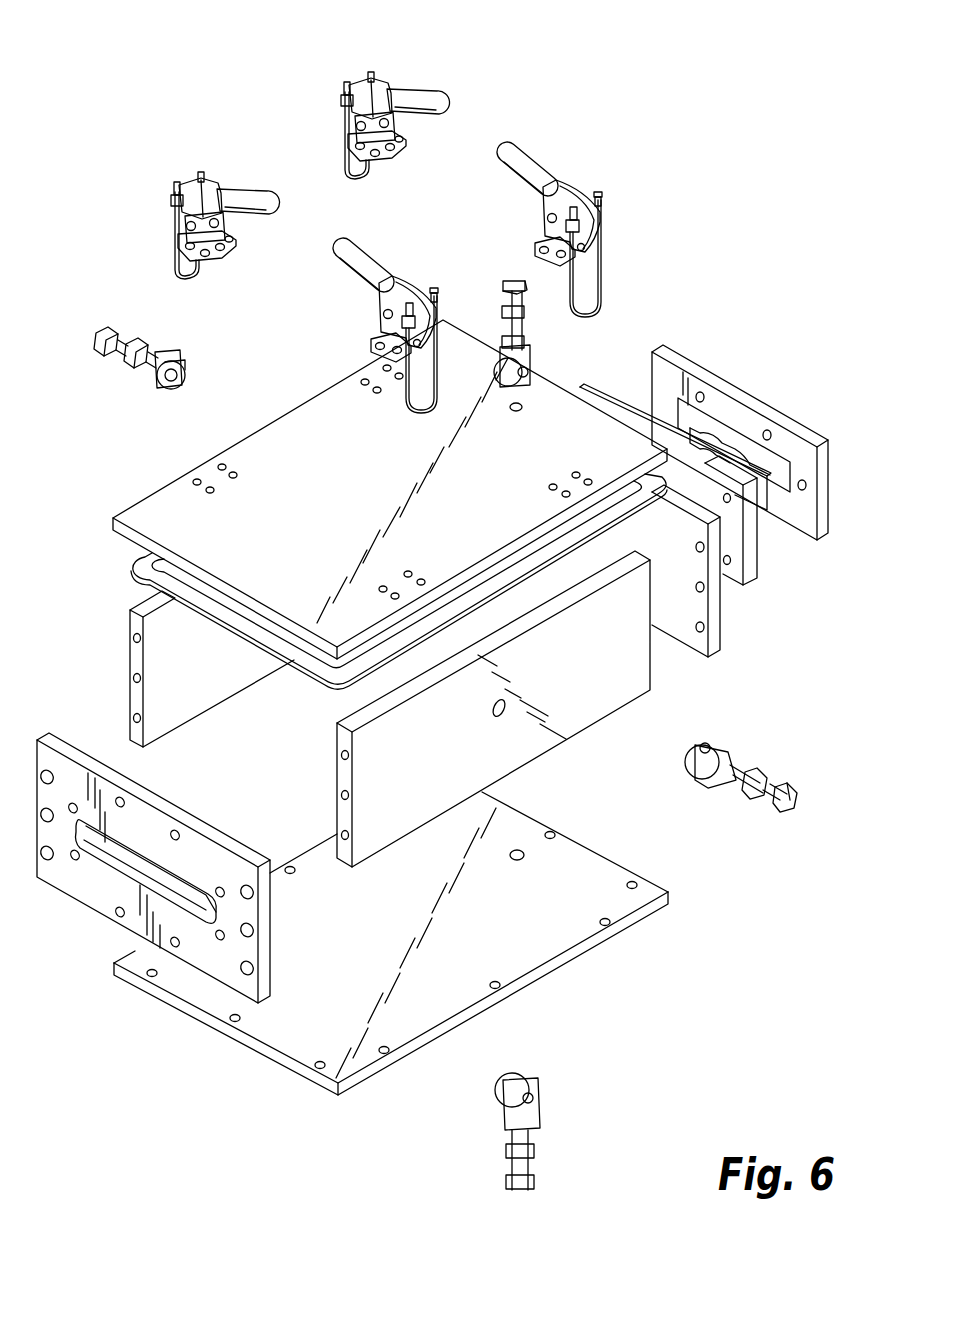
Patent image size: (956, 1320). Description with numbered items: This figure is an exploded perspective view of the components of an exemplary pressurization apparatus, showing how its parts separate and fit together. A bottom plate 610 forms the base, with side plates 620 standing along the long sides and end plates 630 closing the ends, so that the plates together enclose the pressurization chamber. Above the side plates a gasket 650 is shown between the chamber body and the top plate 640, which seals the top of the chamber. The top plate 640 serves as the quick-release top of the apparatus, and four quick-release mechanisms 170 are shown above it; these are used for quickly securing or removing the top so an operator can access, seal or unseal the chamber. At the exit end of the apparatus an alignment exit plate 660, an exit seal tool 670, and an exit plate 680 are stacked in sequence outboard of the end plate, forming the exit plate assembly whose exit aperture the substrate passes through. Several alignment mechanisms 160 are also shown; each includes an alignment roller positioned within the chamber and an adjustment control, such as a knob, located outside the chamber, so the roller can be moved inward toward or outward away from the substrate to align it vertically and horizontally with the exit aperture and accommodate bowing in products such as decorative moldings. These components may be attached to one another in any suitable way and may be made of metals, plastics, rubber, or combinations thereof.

The alignment mechanism 160 is at (105, 335).
The quick-release mechanism 170 is at (355, 78).
The bottom plate 610 is at (300, 1075).
The side plate 620 is at (128, 720).
The end plate 630 is at (160, 797).
The top plate 640 is at (205, 470).
The gasket 650 is at (130, 563).
The alignment exit plate 660 is at (755, 572).
The exit seal tool 670 is at (645, 402).
The exit plate 680 is at (680, 357).